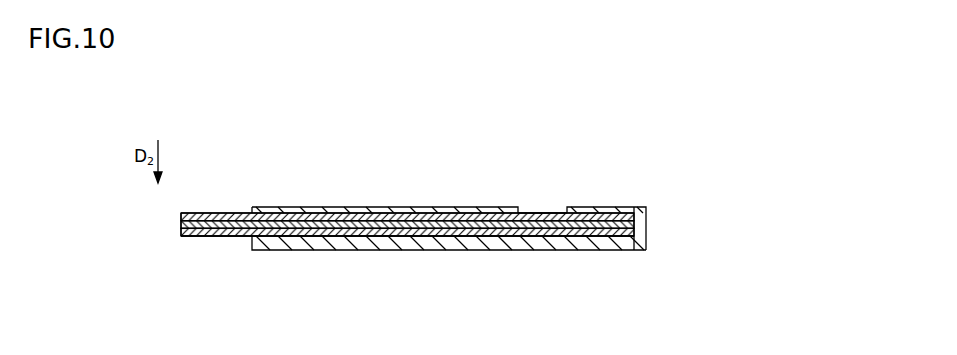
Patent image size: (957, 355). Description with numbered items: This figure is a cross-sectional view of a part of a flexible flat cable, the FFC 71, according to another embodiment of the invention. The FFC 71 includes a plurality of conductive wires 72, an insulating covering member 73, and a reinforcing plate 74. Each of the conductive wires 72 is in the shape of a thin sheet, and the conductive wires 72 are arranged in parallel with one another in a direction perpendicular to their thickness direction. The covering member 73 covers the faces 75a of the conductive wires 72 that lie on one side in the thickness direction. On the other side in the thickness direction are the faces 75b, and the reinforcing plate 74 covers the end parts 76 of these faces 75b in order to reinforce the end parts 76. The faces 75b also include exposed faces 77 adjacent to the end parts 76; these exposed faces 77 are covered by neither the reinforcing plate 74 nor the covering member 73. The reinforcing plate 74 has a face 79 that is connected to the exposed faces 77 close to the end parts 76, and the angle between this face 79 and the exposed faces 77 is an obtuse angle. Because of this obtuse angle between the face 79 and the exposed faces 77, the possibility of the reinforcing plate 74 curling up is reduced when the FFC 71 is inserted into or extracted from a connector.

The FFC 71 is at (439, 226).
The conductive wires 72 is at (197, 213).
The insulating covering member 73 is at (233, 213).
The reinforcing plate 74 is at (275, 207).
The faces 75a is at (222, 237).
The faces 75b is at (362, 213).
The end parts 76 is at (632, 236).
The exposed faces 77 is at (528, 213).
The face 79 is at (557, 213).